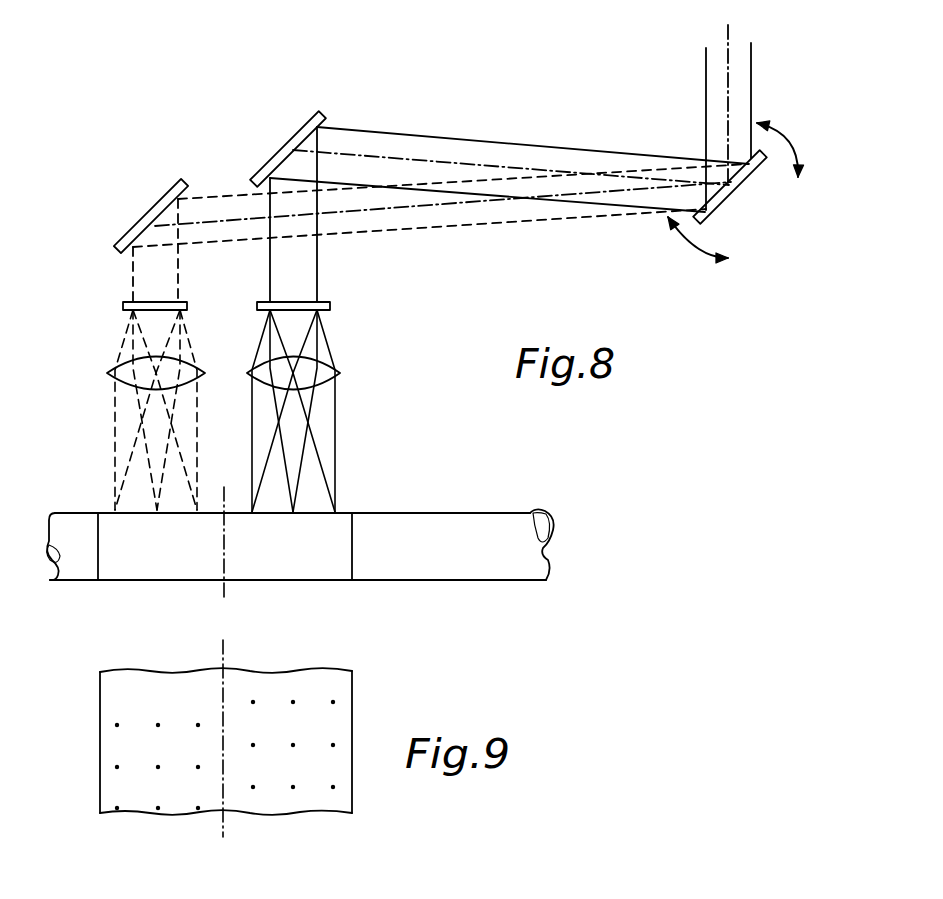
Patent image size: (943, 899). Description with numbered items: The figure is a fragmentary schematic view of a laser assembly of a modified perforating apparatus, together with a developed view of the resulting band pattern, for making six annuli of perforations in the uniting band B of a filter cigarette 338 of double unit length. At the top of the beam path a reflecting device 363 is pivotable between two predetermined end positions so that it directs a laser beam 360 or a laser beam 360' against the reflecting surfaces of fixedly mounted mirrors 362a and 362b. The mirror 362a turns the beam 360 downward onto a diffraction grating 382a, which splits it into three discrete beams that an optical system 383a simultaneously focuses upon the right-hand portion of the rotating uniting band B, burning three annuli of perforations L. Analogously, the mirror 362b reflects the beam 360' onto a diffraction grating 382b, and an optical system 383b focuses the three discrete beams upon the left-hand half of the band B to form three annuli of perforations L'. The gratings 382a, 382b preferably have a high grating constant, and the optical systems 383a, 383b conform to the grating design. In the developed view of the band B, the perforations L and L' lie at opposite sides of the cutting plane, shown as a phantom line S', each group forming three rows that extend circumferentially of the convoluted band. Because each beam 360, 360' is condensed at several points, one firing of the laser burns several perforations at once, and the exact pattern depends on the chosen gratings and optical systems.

In FIG. 8, the filter cigarette of double unit length 338 is at (506, 592).
In FIG. 8, the laser beam 360 is at (509, 201).
In FIG. 8, the laser beam 360' is at (402, 233).
In FIG. 8, the mirror 362a is at (298, 130).
In FIG. 8, the mirror 362b is at (153, 207).
In FIG. 8, the reflecting device 363 is at (745, 188).
In FIG. 8, the diffraction grating 382a is at (330, 306).
In FIG. 8, the diffraction grating 382b is at (123, 306).
In FIG. 8, the optical system 383a is at (340, 373).
In FIG. 8, the optical system 383b is at (108, 374).
In FIG. 8, the uniting band B is at (110, 578).
In FIG. 9, the uniting band B is at (100, 703).
In FIG. 8, the cutting plane S' is at (210, 551).
In FIG. 9, the cutting plane S' is at (210, 749).
In FIG. 9, the perforations L is at (293, 702).
In FIG. 9, the perforations L' is at (157, 712).